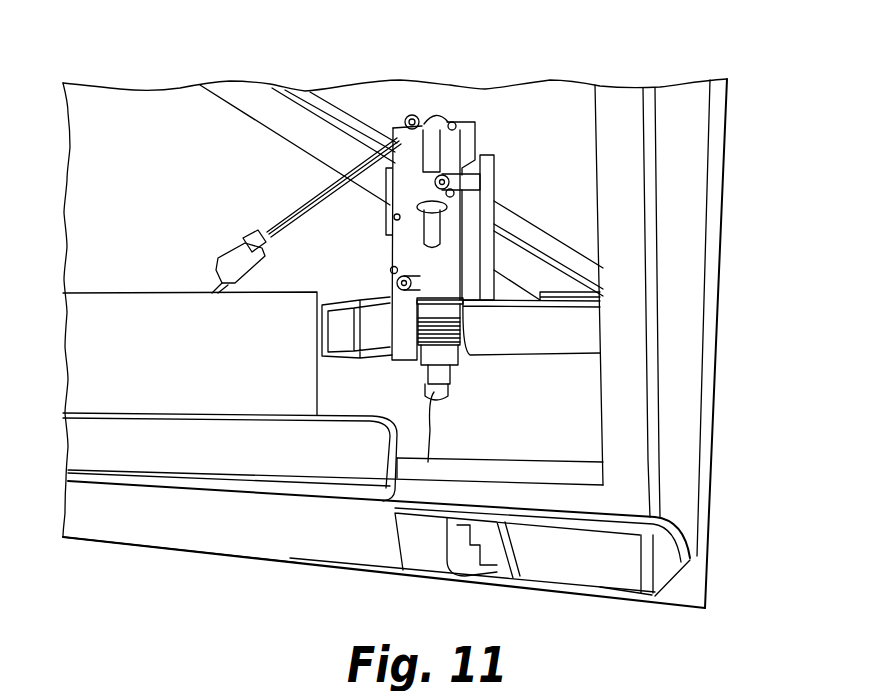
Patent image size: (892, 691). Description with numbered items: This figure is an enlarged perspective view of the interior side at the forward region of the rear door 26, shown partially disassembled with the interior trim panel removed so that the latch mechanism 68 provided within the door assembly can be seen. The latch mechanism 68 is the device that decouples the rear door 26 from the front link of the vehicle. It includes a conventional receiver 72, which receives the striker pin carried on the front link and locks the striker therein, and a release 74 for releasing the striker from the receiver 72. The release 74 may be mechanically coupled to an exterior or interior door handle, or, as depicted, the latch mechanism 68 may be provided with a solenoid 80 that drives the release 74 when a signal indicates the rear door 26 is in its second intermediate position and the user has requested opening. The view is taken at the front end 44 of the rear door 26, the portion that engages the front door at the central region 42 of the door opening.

The latch mechanism 68 is at (533, 48).
The solenoid 80 is at (468, 123).
The rear door 26 is at (730, 190).
The release 74 is at (433, 428).
The receiver 72 is at (483, 583).
The front end 44 is at (710, 560).
The central region 42 is at (158, 690).